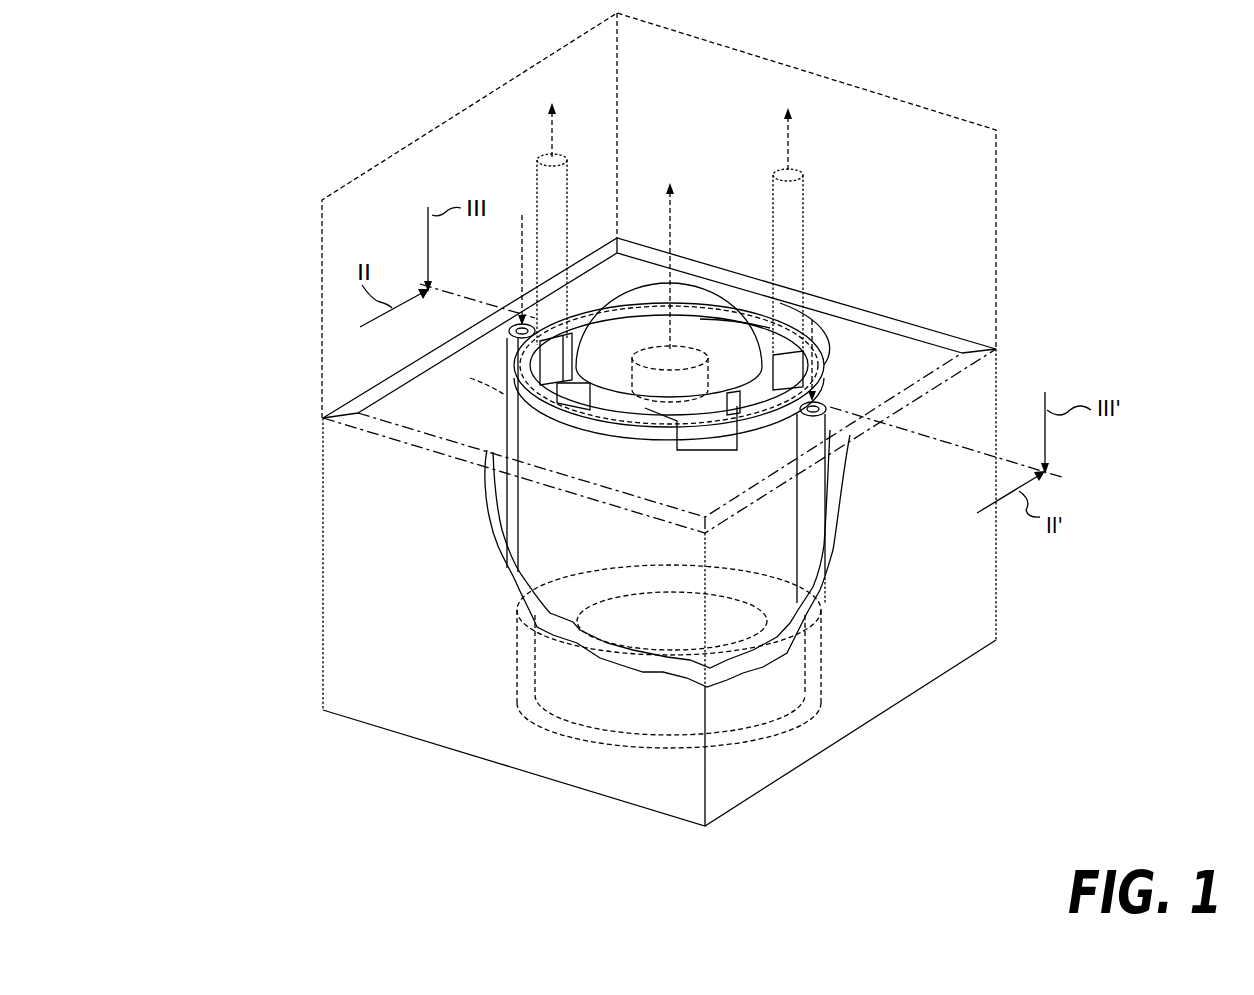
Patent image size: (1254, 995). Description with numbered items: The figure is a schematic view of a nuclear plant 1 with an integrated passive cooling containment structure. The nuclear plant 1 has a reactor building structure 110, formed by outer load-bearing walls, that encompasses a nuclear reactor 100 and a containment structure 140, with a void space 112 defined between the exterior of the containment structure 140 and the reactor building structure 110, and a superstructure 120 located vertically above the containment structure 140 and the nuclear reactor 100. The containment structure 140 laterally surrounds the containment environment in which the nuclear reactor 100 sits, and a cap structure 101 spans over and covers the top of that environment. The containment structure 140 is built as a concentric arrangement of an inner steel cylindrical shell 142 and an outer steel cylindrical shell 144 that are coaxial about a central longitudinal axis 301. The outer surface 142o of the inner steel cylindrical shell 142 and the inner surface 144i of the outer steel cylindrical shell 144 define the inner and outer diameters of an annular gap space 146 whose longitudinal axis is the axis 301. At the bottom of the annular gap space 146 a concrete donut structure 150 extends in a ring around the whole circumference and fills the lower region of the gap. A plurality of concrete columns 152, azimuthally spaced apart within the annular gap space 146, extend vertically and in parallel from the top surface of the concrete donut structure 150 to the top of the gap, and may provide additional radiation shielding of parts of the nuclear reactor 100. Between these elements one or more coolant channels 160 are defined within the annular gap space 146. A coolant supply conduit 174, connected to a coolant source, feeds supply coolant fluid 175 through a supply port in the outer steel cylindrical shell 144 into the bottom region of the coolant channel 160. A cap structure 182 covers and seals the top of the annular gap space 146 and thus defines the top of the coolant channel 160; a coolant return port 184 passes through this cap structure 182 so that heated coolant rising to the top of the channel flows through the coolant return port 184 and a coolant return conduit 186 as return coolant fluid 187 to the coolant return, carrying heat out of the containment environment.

The nuclear plant 1 is at (279, 720).
The nuclear reactor 100 is at (688, 346).
The cap structure 101 is at (642, 293).
The reactor building structure 110 is at (330, 462).
The void space 112 is at (406, 413).
The superstructure 120 is at (314, 202).
The containment structure 140 is at (832, 351).
The inner steel cylindrical shell 142 is at (735, 312).
The outer surface of the inner steel cylindrical shell 142o is at (836, 336).
The outer steel cylindrical shell 144 is at (840, 400).
The inner surface of the outer steel cylindrical shell 144i is at (751, 320).
The annular gap space 146 is at (558, 336).
The concrete donut structure 150 is at (555, 692).
The concrete columns 152 is at (563, 392).
The coolant channel 160 is at (716, 453).
The coolant supply conduit 174 is at (507, 422).
The supply coolant fluid 175 is at (522, 262).
The cap structure 182 is at (472, 381).
The coolant return port 184 is at (507, 340).
The coolant return conduit 186 is at (534, 192).
The return coolant fluid 187 is at (548, 125).
The central longitudinal axis 301 is at (676, 190).